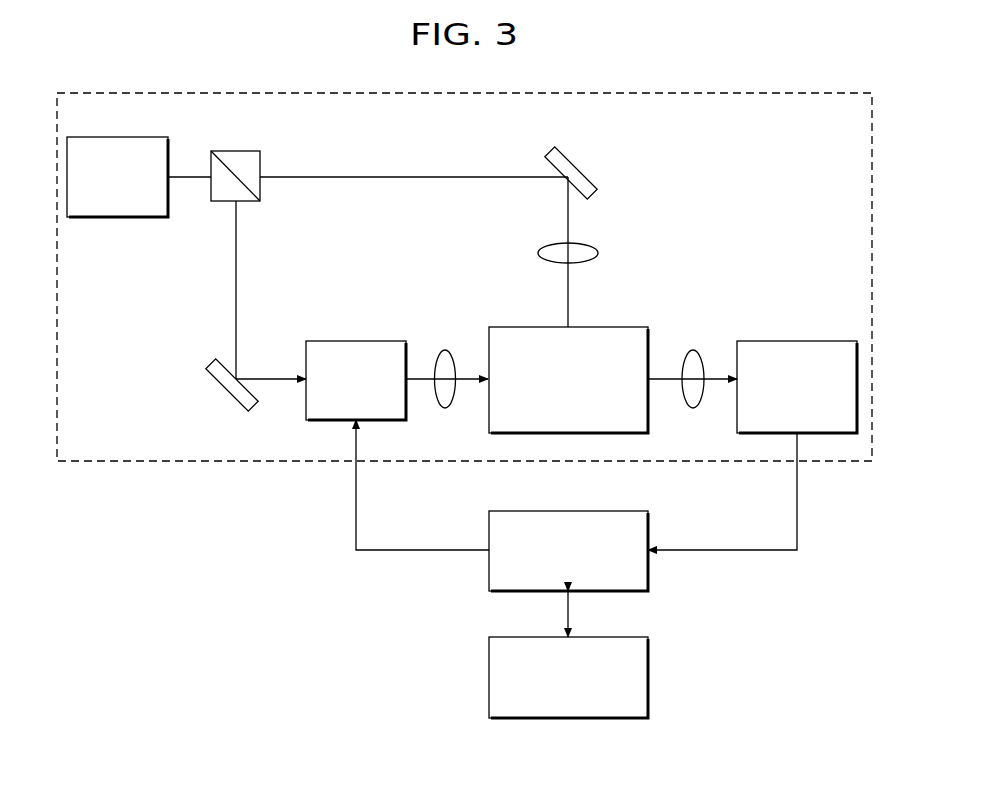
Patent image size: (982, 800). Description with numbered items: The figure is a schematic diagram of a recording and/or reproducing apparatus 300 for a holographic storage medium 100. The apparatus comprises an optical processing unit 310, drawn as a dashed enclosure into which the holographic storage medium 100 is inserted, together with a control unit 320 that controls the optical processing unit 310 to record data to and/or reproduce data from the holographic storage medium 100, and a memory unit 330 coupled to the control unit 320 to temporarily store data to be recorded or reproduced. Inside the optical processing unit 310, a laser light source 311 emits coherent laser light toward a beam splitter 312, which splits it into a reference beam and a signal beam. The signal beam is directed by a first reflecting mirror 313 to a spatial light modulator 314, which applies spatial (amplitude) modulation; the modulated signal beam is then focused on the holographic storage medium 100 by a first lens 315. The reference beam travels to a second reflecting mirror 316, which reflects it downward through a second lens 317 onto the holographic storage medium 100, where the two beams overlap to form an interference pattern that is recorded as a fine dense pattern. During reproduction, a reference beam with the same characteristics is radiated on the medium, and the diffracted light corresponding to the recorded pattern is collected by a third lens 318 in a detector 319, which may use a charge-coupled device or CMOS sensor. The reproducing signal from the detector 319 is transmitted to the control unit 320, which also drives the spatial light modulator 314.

The recording and/or reproducing apparatus 300 is at (313, 607).
The optical processing unit 310 is at (152, 461).
The laser light source 311 is at (120, 137).
The beam splitter 312 is at (238, 151).
The first reflecting mirror 313 is at (225, 395).
The spatial light modulator 314 is at (356, 339).
The first lens 315 is at (445, 350).
The second reflecting mirror 316 is at (579, 167).
The second lens 317 is at (598, 253).
The holographic storage medium 100 is at (590, 326).
The third lens 318 is at (693, 350).
The detector 319 is at (802, 339).
The control unit 320 is at (587, 510).
The memory unit 330 is at (587, 636).